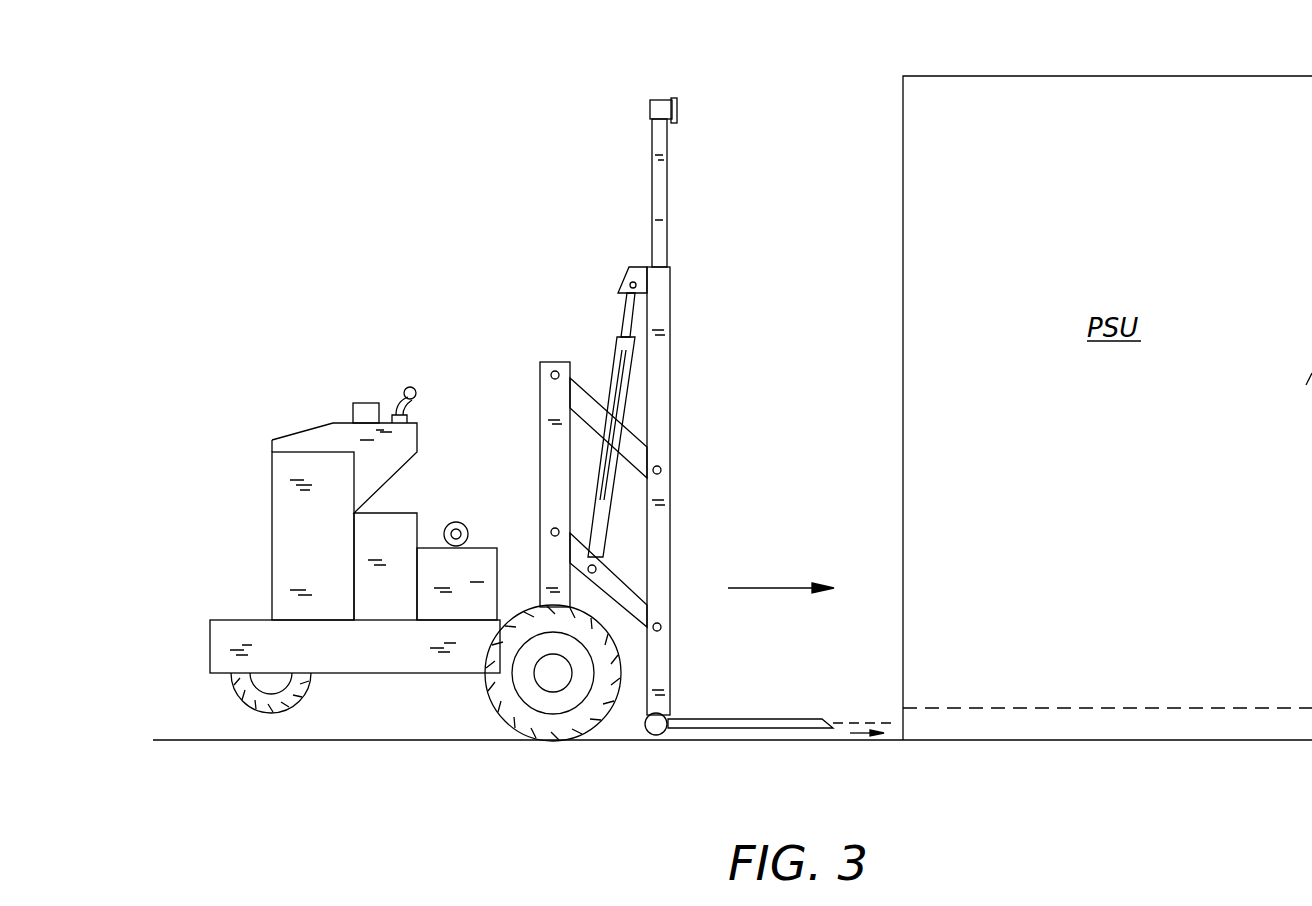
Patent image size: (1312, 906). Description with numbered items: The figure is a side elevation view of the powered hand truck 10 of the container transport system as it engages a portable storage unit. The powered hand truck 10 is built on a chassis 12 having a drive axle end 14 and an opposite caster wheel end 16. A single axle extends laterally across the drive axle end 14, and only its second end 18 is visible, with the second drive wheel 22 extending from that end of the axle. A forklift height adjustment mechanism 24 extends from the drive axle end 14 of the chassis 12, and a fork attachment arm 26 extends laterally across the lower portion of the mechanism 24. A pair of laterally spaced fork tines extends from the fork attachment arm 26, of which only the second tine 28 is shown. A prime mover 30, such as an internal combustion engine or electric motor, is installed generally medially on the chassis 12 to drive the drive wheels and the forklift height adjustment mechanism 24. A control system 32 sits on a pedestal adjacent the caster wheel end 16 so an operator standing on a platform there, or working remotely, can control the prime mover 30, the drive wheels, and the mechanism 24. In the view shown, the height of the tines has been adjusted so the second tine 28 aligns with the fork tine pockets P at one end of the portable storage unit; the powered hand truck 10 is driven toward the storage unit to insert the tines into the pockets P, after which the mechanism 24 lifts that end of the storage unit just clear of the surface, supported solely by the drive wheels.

The powered hand truck 10 is at (295, 350).
The chassis 12 is at (366, 663).
The drive axle end 14 is at (475, 675).
The caster wheel end 16 is at (210, 673).
The second end of the axle 18 is at (547, 676).
The second drive wheel 22 is at (602, 730).
The forklift height adjustment mechanism 24 is at (603, 256).
The fork attachment arm 26 is at (656, 736).
The second tine 28 is at (748, 719).
The prime mover 30 is at (474, 583).
The control system 32 is at (365, 403).
The fork tine pockets P is at (845, 742).